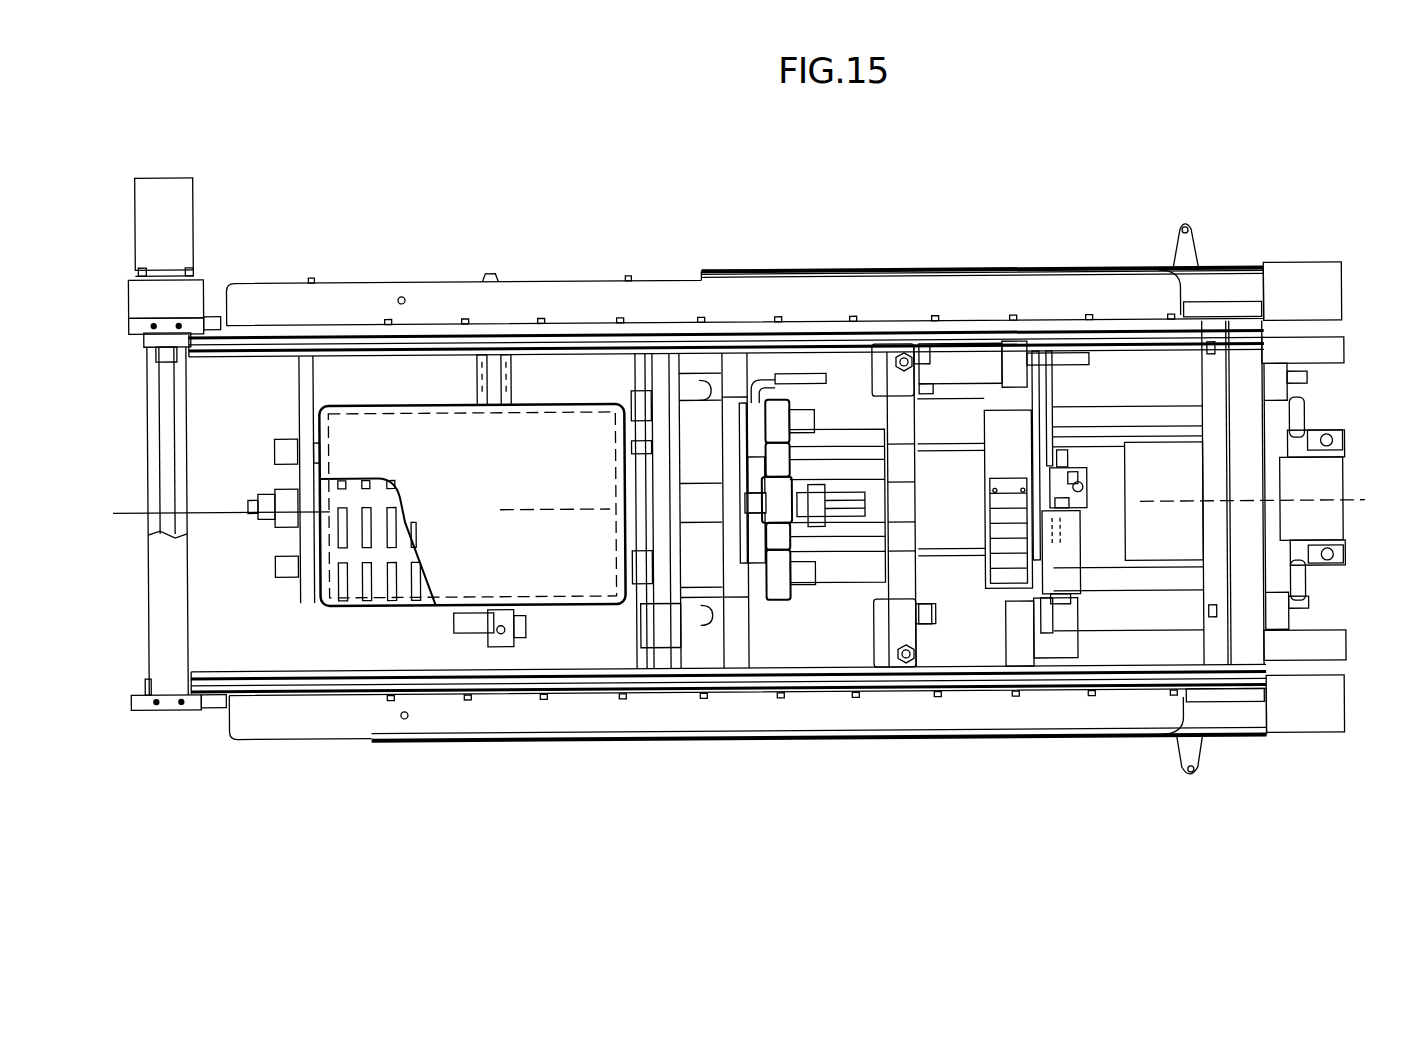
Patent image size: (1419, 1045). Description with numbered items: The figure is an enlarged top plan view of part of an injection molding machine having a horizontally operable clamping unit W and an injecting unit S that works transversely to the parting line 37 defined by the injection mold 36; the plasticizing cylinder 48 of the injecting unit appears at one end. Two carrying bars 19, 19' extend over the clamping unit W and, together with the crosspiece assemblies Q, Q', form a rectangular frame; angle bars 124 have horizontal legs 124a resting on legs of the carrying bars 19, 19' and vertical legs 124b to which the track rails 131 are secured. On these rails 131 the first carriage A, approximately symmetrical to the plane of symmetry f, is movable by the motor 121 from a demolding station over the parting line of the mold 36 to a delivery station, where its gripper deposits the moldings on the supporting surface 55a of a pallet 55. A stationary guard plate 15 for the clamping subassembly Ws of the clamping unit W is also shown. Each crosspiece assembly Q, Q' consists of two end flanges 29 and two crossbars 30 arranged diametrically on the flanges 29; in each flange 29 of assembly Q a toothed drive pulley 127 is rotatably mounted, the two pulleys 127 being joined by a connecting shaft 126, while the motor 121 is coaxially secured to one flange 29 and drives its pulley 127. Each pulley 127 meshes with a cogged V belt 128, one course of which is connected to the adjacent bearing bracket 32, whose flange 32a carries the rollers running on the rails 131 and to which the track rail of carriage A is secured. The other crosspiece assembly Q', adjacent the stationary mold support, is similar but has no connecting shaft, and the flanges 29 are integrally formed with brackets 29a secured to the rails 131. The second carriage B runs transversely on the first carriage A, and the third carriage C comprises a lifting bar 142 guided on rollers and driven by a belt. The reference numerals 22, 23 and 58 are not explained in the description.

The stationary guard plate 15 is at (902, 537).
The carrying bar 19 is at (1286, 265).
The carrying bar 19' is at (1286, 732).
The guide block 22 is at (963, 378).
The support column 23 is at (1060, 568).
The end flange 29 is at (138, 346).
The bracket 29a is at (213, 316).
The crossbar 30 is at (155, 594).
The bearing bracket 32 is at (1017, 369).
The flange 32a is at (1047, 349).
The injection mold 36 is at (966, 526).
The parting line 37 is at (1102, 538).
The plasticizing cylinder 48 is at (1320, 531).
The pallet 55 is at (313, 533).
The supporting surface 55a is at (478, 510).
The guide bar 58 is at (312, 393).
The motor 121 is at (150, 232).
The angle bar 124 is at (667, 278).
The horizontal leg 124a is at (640, 312).
The vertical leg 124b is at (681, 321).
The connecting shaft 126 is at (168, 496).
The drive pulley 127 is at (170, 352).
The cogged V belt 128 is at (832, 326).
The track rail 131 is at (352, 348).
The lifting bar 142 is at (1091, 495).
The first carriage A is at (1055, 399).
The second carriage B is at (1070, 452).
The third carriage C is at (1076, 484).
The clamping unit W is at (973, 270).
The clamping subassembly Ws is at (292, 449).
The injecting unit S is at (1293, 264).
The crosspiece assembly Q is at (114, 463).
The crosspiece assembly Q' is at (1321, 369).
The plane of symmetry f is at (741, 505).